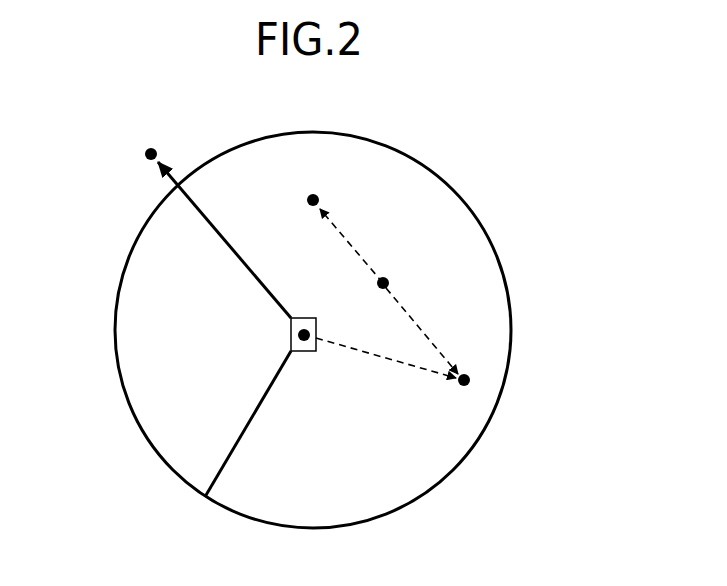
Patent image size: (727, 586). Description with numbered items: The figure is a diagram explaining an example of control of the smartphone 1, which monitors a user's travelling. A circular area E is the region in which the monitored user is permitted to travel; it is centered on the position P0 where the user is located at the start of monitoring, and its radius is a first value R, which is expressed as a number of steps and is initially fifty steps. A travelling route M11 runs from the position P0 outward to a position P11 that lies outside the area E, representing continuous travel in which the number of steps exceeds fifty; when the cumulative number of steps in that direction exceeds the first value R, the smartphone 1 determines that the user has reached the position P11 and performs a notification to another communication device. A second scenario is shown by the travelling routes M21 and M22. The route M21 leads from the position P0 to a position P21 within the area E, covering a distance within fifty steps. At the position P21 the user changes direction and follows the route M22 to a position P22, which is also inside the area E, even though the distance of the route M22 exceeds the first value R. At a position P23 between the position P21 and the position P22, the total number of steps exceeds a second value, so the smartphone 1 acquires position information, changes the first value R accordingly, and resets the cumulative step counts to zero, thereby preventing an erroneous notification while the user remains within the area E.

The area E is at (492, 231).
The position P0 is at (287, 334).
The travelling route M11 is at (235, 253).
The position P11 is at (154, 141).
The position P22 is at (314, 190).
The position P23 is at (385, 273).
The position P21 is at (476, 387).
The travelling route M22 is at (439, 350).
The travelling route M21 is at (400, 362).
The first value R is at (220, 474).
The smartphone 1 is at (304, 351).